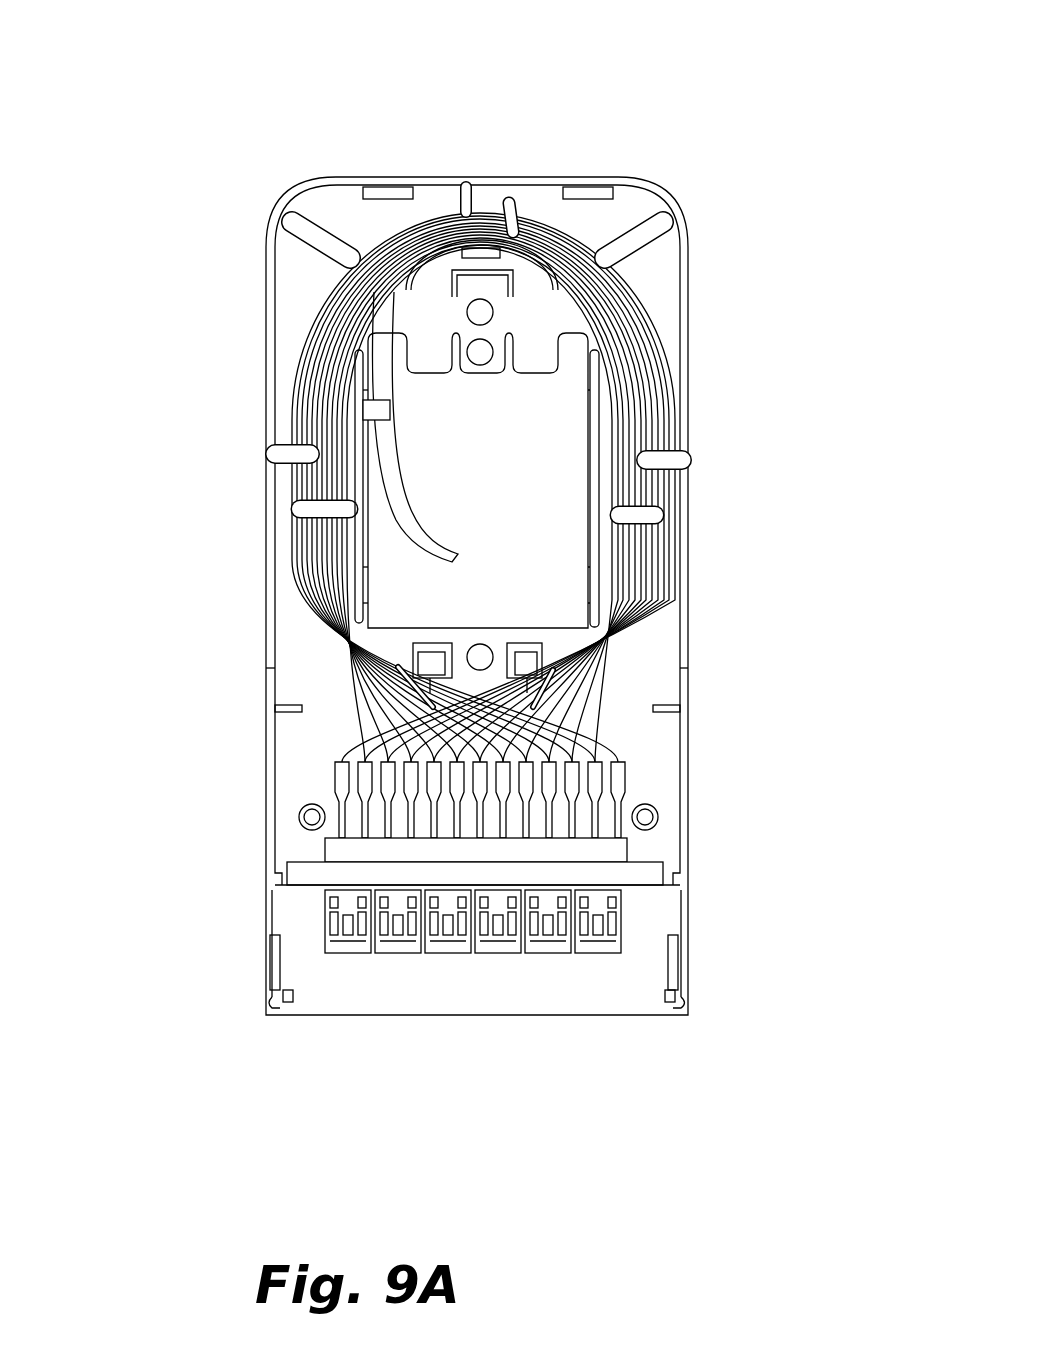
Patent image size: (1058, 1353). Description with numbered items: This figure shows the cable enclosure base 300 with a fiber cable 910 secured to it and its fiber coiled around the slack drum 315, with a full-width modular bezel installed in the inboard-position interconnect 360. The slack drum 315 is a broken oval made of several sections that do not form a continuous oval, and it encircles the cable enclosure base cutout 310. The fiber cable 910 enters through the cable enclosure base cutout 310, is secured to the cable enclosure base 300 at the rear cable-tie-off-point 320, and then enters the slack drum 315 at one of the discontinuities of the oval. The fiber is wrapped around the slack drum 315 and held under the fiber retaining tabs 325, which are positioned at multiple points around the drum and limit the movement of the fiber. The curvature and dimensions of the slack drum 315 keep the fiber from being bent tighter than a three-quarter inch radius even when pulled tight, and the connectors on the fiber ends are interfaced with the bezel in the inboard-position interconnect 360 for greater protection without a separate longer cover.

The cable enclosure base 300 is at (597, 114).
The cable enclosure base cutout 310 is at (570, 562).
The slack drum 315 is at (550, 267).
The rear cable-tie-off-point 320 is at (392, 410).
The fiber retaining tabs 325 is at (508, 218).
The inboard-position interconnect 360 is at (680, 885).
The fiber cable 910 is at (372, 325).